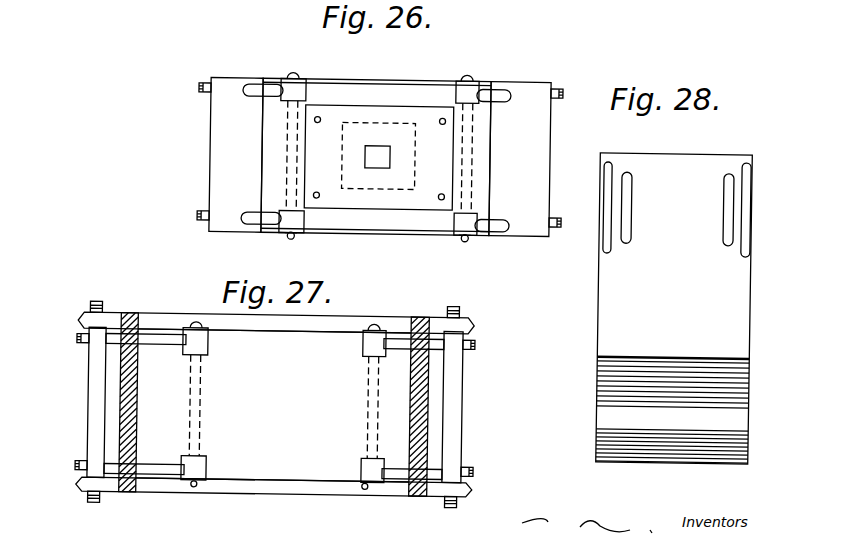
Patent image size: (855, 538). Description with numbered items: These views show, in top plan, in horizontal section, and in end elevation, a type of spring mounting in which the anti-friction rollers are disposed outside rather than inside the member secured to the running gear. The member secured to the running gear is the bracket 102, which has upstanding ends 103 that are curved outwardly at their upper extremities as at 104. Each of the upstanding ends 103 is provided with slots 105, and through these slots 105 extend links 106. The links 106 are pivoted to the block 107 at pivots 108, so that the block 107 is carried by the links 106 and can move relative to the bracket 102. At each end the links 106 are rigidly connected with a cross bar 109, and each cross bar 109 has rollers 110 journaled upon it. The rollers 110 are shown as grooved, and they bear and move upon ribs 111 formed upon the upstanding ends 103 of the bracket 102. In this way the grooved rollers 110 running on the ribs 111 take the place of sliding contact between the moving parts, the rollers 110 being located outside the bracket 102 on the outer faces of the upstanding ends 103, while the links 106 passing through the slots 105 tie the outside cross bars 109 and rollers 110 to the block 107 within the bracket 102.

In FIG. 26, the bracket 102 is at (480, 196).
In FIG. 27, the bracket 102 is at (340, 329).
In FIG. 28, the bracket 102 is at (674, 308).
In FIG. 27, the upstanding ends 103 is at (130, 390).
In FIG. 28, the upstanding ends 103 is at (683, 190).
In FIG. 26, the outwardly curved upper extremities 104 is at (380, 156).
In FIG. 28, the outwardly curved upper extremities 104 is at (656, 146).
In FIG. 28, the slots 105 is at (721, 211).
In FIG. 26, the links 106 is at (253, 84).
In FIG. 27, the links 106 is at (156, 338).
In FIG. 26, the block 107 is at (365, 108).
In FIG. 26, the pivot 108 is at (293, 78).
In FIG. 27, the pivot 108 is at (207, 326).
In FIG. 27, the cross bar 109 is at (90, 406).
In FIG. 27, the rollers 110 is at (78, 323).
In FIG. 27, the ribs 111 is at (128, 315).
In FIG. 28, the ribs 111 is at (603, 197).